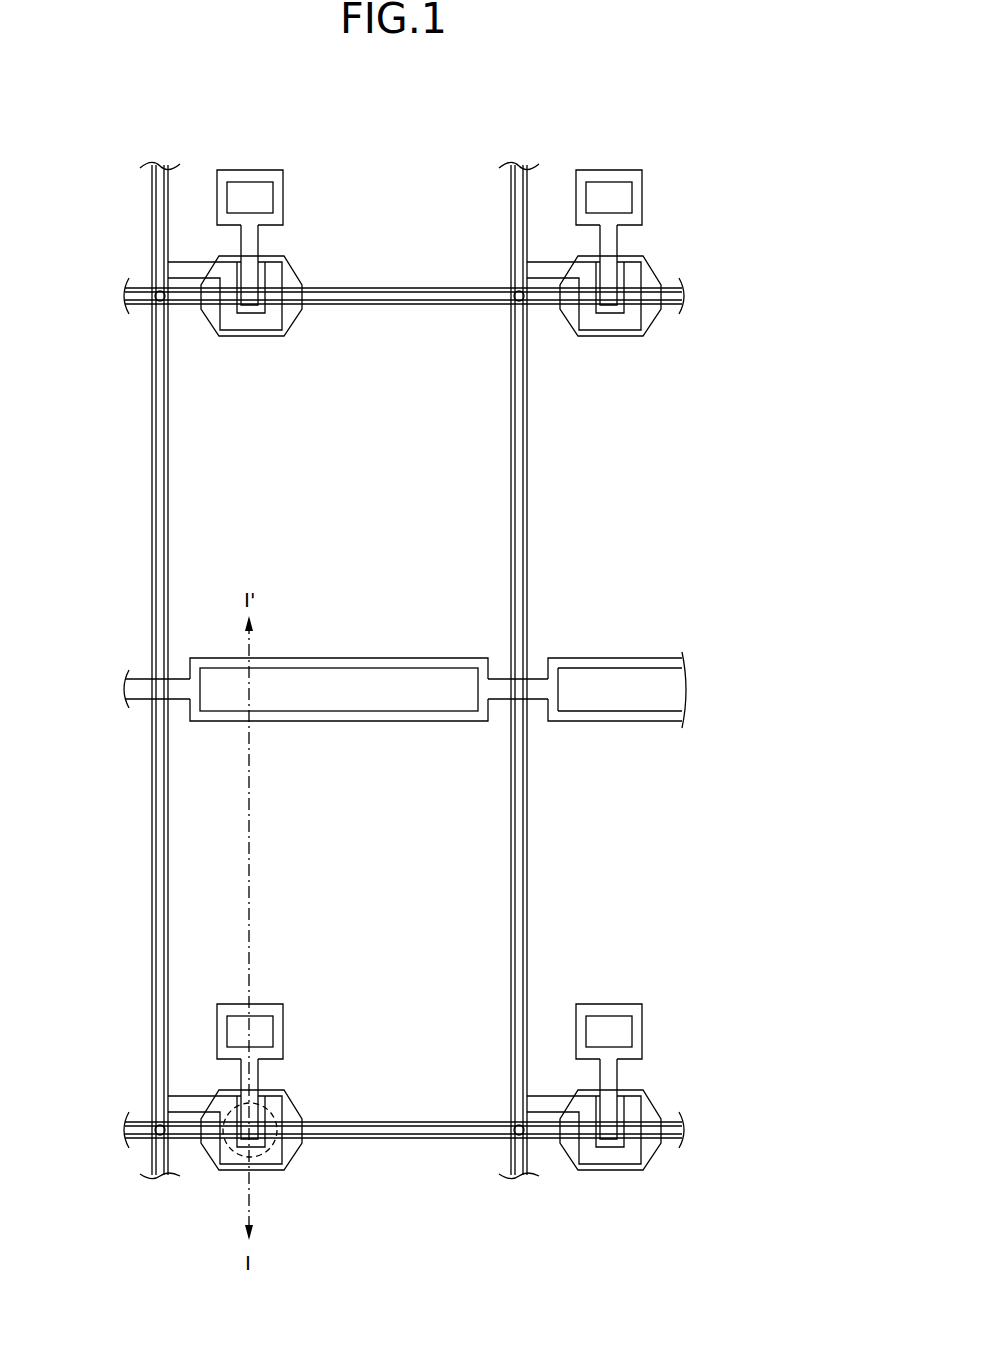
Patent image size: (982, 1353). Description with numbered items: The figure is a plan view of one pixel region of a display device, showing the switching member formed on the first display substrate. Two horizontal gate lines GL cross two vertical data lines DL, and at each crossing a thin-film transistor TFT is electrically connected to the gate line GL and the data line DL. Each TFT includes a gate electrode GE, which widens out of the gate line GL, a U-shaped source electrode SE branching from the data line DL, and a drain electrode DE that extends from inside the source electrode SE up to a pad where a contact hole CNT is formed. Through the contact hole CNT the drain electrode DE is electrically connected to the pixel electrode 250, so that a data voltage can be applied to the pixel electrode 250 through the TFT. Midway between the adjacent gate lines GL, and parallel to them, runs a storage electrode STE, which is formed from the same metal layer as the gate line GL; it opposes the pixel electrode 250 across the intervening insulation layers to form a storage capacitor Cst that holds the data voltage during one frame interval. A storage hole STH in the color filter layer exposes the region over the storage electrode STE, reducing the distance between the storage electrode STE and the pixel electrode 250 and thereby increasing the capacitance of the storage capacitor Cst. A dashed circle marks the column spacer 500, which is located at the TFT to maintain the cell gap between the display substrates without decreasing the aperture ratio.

The gate line GL is at (413, 1139).
The data line DL is at (160, 908).
The pixel electrode 250 is at (162, 864).
The gate electrode GE is at (221, 1167).
The source electrode SE is at (262, 1163).
The drain electrode DE is at (252, 1148).
The contact hole CNT is at (227, 1032).
The thin-film transistor TFT is at (268, 1141).
The column spacer 500 is at (224, 1140).
The storage capacitor Cst is at (405, 694).
The storage electrode STE is at (417, 658).
The storage hole STH is at (419, 712).